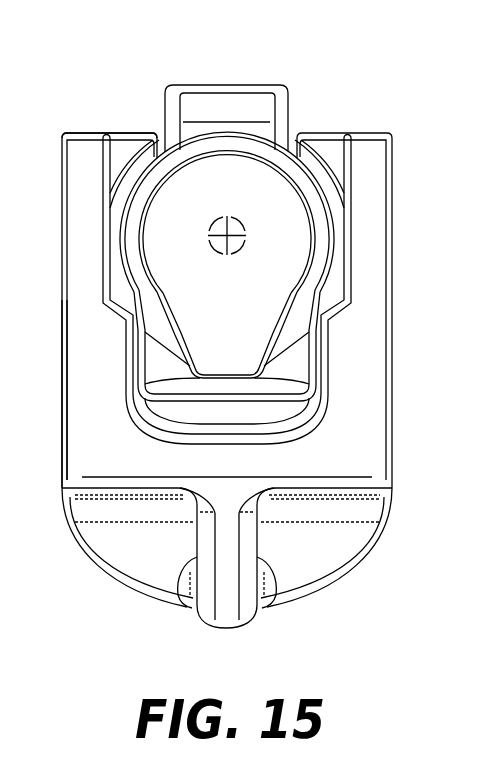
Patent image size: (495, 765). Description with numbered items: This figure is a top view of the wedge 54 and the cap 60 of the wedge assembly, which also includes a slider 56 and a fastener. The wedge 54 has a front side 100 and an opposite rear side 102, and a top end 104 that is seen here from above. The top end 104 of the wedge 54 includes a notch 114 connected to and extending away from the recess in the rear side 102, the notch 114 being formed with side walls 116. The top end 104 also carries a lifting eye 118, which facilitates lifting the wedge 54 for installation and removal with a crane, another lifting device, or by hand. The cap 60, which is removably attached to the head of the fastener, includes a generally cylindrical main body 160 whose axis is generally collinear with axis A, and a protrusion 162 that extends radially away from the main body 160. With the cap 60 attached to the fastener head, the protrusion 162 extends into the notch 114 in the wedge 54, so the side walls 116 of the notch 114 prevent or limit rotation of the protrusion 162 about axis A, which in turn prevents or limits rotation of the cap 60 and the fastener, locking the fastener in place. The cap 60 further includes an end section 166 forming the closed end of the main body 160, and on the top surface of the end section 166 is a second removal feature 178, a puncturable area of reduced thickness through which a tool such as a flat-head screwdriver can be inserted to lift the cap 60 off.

The wedge 54 is at (393, 451).
The slider 56 is at (225, 77).
The cap 60 is at (319, 243).
The front side 100 is at (272, 609).
The rear side 102 is at (88, 133).
The top end 104 is at (83, 430).
The notch 114 is at (246, 413).
The side walls 116 is at (283, 373).
The lifting eye 118 is at (208, 618).
The main body 160 is at (316, 294).
The protrusion 162 is at (300, 348).
The end section 166 is at (143, 252).
The second removal feature 178 is at (219, 254).